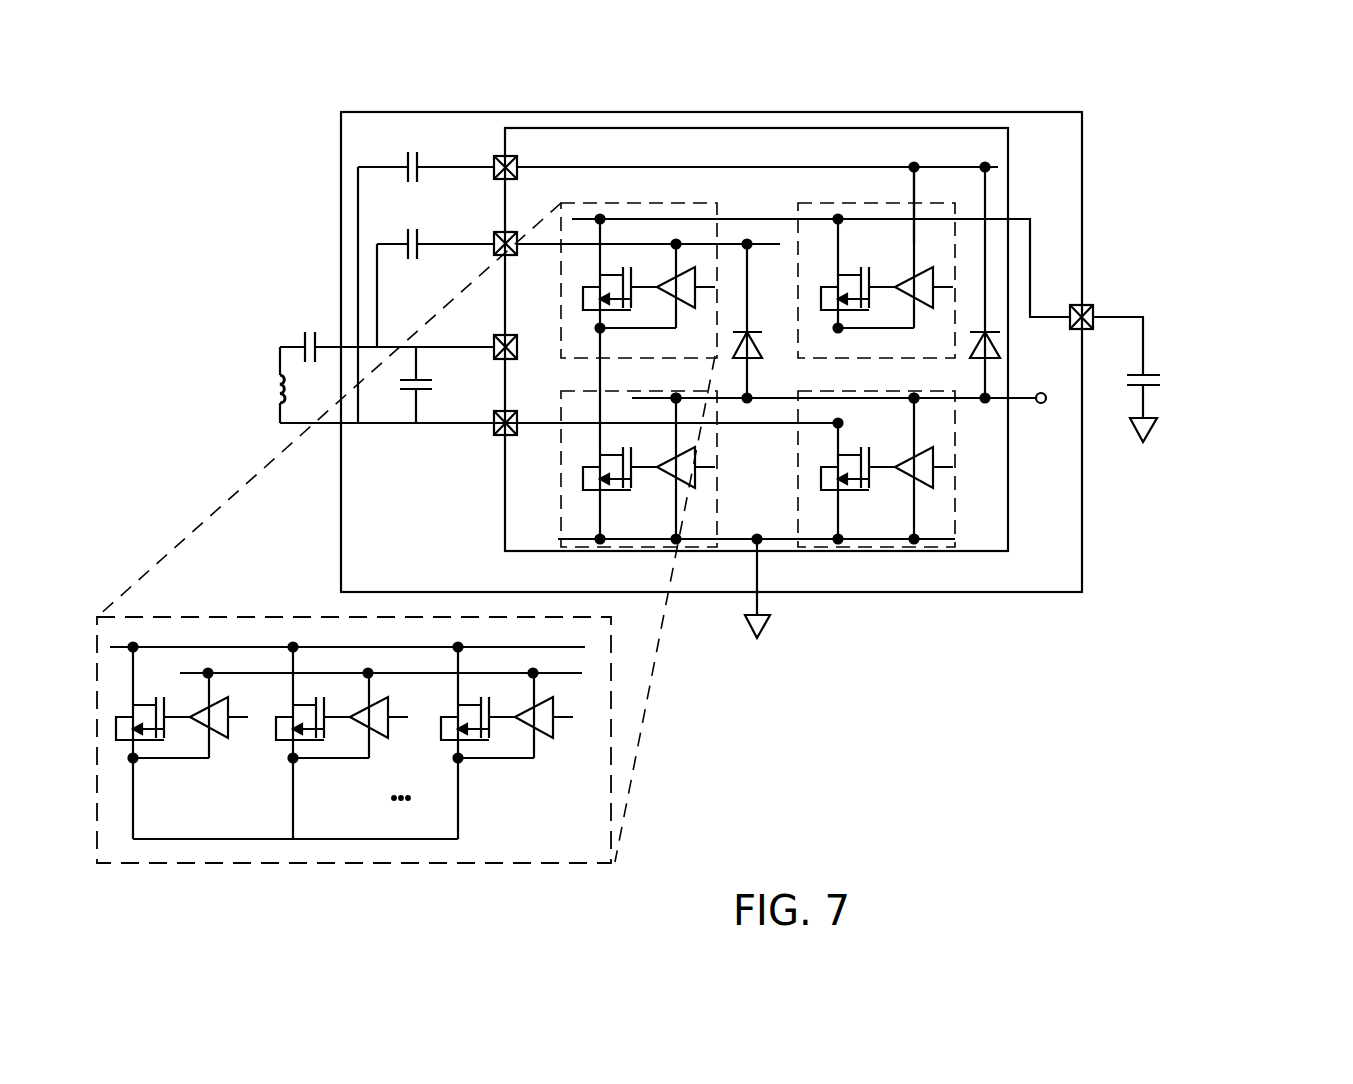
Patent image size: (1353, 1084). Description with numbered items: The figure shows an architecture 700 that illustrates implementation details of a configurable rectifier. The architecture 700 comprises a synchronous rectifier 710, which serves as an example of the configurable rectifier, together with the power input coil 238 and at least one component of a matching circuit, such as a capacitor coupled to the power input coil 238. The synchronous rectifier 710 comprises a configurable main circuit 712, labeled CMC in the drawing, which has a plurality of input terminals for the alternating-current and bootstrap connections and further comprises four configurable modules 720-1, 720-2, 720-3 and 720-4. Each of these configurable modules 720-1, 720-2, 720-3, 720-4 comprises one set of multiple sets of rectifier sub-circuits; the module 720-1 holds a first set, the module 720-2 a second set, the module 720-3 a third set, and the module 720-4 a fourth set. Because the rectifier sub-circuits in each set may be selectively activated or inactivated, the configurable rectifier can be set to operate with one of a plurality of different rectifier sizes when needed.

The architecture 700 is at (713, 465).
The synchronous rectifier 710 is at (750, 375).
The configurable main circuit 712 is at (827, 375).
The configurable module 720-1 is at (638, 202).
The configurable module 720-2 is at (876, 202).
The configurable module 720-3 is at (707, 548).
The configurable module 720-4 is at (955, 498).
The power input coil 238 is at (274, 381).